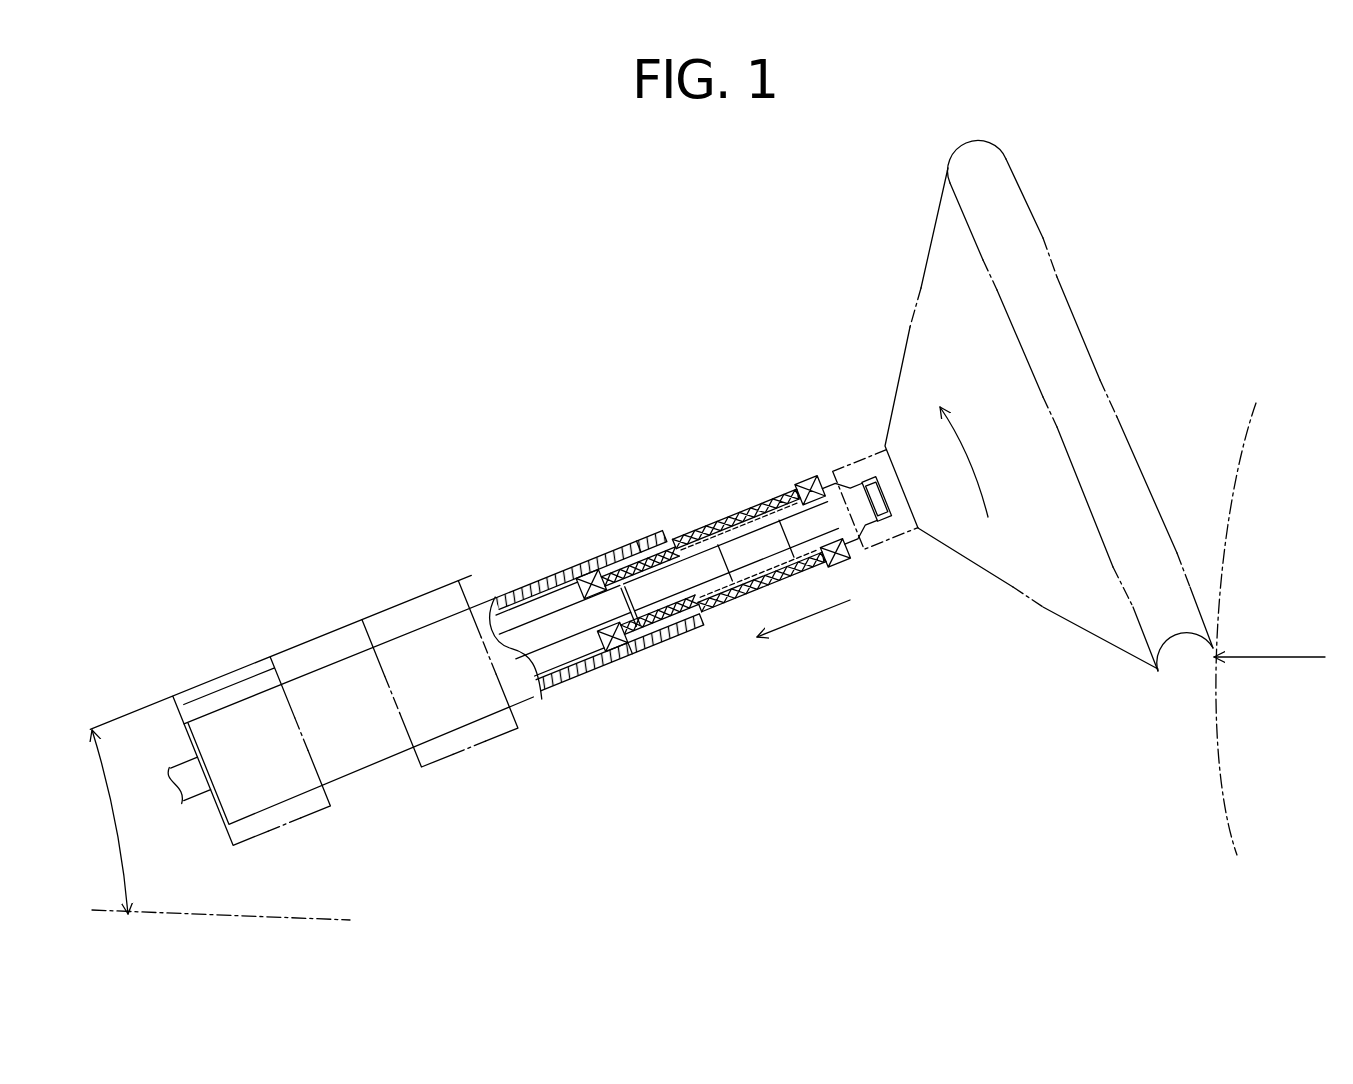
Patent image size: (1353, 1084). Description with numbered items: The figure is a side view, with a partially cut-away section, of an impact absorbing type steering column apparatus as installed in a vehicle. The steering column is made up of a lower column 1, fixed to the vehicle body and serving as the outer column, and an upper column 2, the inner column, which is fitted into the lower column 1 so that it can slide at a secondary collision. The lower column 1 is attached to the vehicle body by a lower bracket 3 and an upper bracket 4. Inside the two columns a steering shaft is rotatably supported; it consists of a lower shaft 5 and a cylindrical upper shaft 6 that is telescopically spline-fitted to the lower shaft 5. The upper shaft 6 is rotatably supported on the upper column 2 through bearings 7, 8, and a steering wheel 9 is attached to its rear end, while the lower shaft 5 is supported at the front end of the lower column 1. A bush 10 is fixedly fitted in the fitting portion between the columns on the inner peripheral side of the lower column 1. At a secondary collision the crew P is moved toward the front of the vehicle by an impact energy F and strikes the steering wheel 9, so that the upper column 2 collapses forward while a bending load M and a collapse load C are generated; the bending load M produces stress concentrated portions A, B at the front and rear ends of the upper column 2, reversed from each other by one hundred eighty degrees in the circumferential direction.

The lower column 1 is at (535, 588).
The upper column 2 is at (757, 505).
The lower bracket 3 is at (248, 690).
The upper bracket 4 is at (398, 626).
The lower shaft 5 is at (541, 692).
The upper shaft 6 is at (887, 531).
The bearing 7 is at (594, 579).
The bearing 8 is at (810, 486).
The steering wheel 9 is at (1070, 283).
The bush 10 is at (641, 535).
The stress concentrated portion A is at (670, 532).
The stress concentrated portion B is at (614, 657).
The collapse load C is at (845, 605).
The impact energy F is at (1281, 654).
The bending load M is at (968, 457).
The crew P is at (1215, 754).